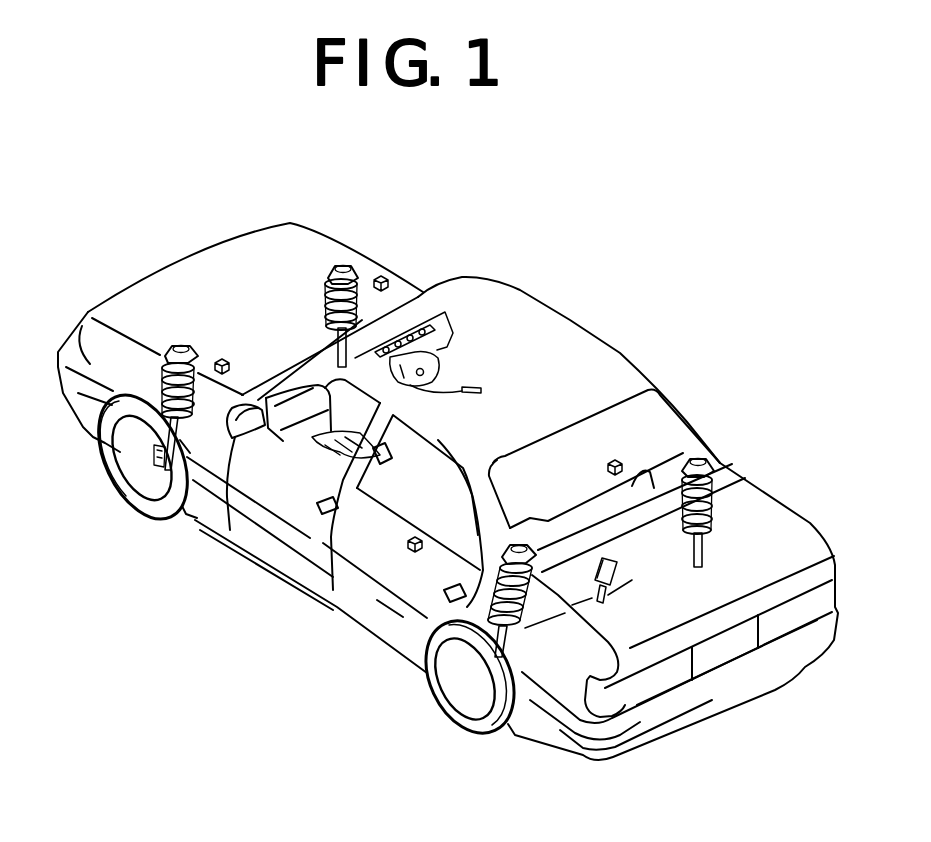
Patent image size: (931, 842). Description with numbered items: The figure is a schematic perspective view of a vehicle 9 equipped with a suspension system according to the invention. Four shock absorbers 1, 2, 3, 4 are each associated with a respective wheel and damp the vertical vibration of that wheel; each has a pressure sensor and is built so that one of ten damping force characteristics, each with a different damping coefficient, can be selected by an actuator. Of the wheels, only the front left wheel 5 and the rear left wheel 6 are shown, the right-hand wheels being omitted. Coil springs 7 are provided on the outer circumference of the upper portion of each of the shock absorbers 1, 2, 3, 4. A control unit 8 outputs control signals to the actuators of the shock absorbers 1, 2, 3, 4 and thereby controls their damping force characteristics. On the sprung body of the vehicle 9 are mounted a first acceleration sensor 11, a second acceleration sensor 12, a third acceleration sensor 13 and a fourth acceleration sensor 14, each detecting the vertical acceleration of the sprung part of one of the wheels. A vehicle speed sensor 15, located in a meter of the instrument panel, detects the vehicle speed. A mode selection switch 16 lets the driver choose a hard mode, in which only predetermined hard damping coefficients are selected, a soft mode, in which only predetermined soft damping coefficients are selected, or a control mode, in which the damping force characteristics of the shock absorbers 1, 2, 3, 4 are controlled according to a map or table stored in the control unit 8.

The shock absorber 1 is at (178, 345).
The shock absorber 2 is at (340, 270).
The shock absorber 3 is at (520, 545).
The shock absorber 4 is at (697, 460).
The front left wheel 5 is at (122, 477).
The rear left wheel 6 is at (440, 680).
The coil spring 7 is at (330, 287).
The control unit 8 is at (618, 578).
The vehicle 9 is at (228, 545).
The first acceleration sensor 11 is at (218, 360).
The second acceleration sensor 12 is at (383, 278).
The third acceleration sensor 13 is at (413, 537).
The fourth acceleration sensor 14 is at (613, 460).
The vehicle speed sensor 15 is at (410, 322).
The mode selection switch 16 is at (317, 463).